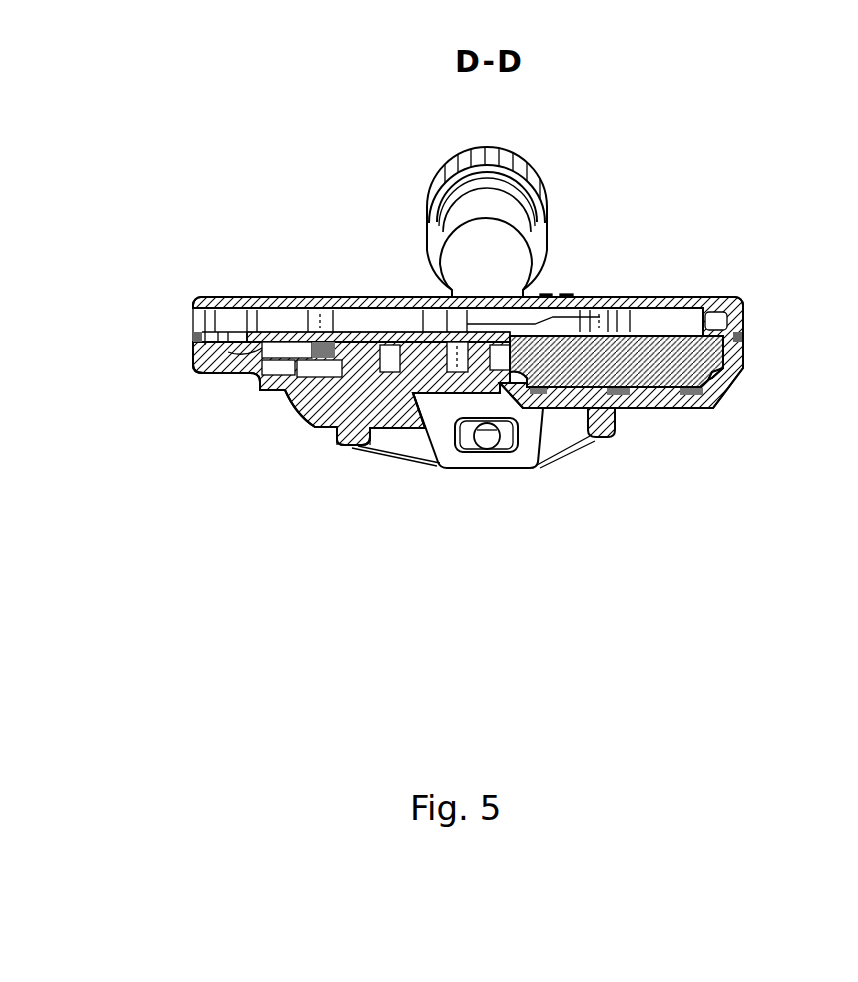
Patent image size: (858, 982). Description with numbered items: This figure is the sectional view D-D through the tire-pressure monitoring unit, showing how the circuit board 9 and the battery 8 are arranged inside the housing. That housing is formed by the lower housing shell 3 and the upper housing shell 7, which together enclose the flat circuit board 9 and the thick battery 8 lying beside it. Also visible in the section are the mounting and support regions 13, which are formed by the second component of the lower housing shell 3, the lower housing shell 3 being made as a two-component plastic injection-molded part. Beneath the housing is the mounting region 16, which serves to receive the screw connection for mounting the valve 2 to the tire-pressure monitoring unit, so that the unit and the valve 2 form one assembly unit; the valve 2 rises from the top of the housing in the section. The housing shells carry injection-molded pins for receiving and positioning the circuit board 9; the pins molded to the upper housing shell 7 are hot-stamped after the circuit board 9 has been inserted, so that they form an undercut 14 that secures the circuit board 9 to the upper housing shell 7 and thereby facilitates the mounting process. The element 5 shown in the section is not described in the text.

The valve 2 is at (463, 238).
The lower housing shell 3 is at (262, 388).
The sealing ring 5 is at (192, 333).
The upper housing shell 7 is at (652, 302).
The battery 8 is at (727, 363).
The circuit board 9 is at (285, 333).
The mounting and support regions 13 is at (335, 358).
The undercut 14 is at (200, 373).
The mounting region 16 is at (510, 455).